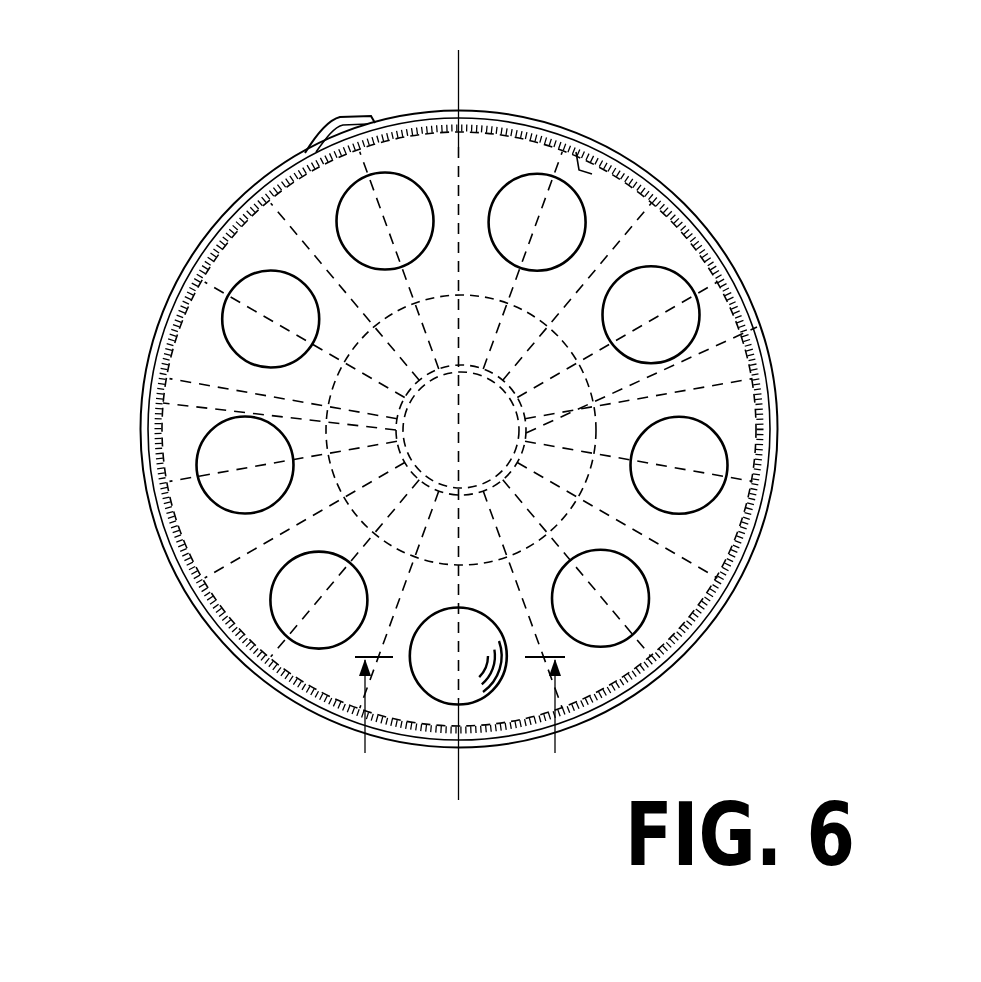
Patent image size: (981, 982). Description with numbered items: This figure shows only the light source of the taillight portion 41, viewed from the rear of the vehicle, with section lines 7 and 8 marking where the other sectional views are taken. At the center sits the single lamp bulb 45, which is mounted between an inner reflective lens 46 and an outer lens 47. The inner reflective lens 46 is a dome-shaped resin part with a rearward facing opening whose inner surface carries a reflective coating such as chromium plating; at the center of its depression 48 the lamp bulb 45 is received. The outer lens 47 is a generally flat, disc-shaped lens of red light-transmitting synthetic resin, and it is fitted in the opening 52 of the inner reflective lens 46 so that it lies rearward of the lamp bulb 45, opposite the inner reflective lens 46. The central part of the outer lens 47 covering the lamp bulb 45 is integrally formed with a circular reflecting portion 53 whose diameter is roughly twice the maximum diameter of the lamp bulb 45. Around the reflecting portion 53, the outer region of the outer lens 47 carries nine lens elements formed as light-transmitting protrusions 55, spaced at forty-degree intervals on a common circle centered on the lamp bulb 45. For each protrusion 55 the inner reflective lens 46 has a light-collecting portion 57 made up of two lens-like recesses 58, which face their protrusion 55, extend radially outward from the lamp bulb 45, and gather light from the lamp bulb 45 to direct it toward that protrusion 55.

The taillight portion 41 is at (238, 182).
The lamp bulb 45 is at (138, 395).
The inner reflective lens 46 is at (652, 214).
The outer lens 47 is at (775, 398).
The depression 48 is at (757, 327).
The opening 52 is at (628, 163).
The reflecting portion 53 is at (580, 485).
The protrusions 55 is at (230, 287).
The light-collecting portions 57 is at (353, 58).
The recesses 58 is at (334, 118).
The section line 7- 7 is at (450, 62).
The section line 8- 8 is at (462, 717).